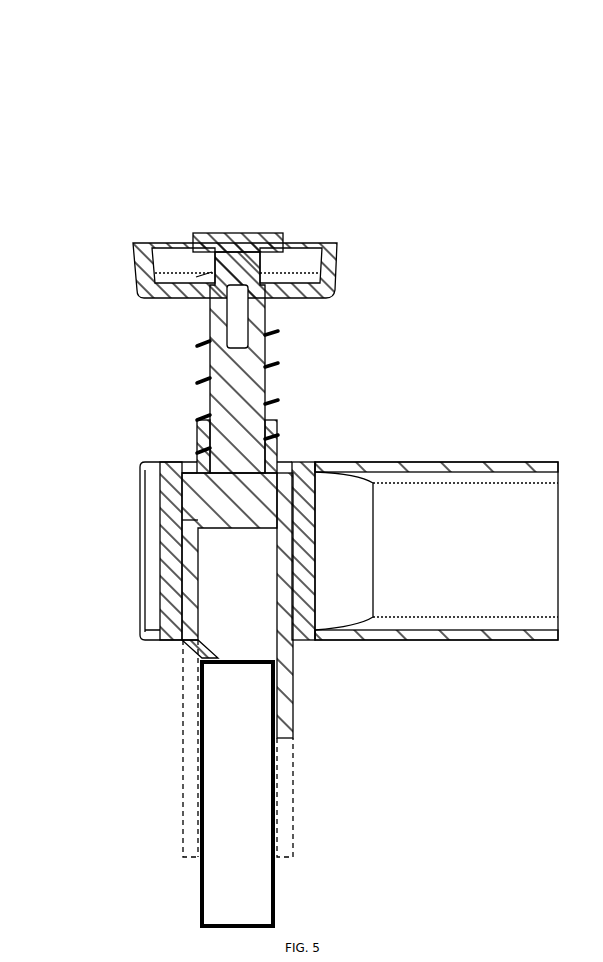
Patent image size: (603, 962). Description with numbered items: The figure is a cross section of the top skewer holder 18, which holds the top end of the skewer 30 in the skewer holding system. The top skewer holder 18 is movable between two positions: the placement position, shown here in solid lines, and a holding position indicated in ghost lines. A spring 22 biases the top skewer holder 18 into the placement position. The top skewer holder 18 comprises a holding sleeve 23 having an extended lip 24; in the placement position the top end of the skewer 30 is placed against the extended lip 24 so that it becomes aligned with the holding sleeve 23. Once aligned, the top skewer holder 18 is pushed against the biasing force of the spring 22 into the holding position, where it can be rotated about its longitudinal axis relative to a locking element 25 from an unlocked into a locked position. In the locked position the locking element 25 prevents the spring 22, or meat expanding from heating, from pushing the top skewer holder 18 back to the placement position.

The top skewer holder 18 is at (285, 207).
The spring 22 is at (197, 343).
The holding sleeve 23 is at (195, 587).
The extended lip 24 is at (282, 690).
The locking element 25 is at (163, 520).
The skewer 30 is at (240, 793).